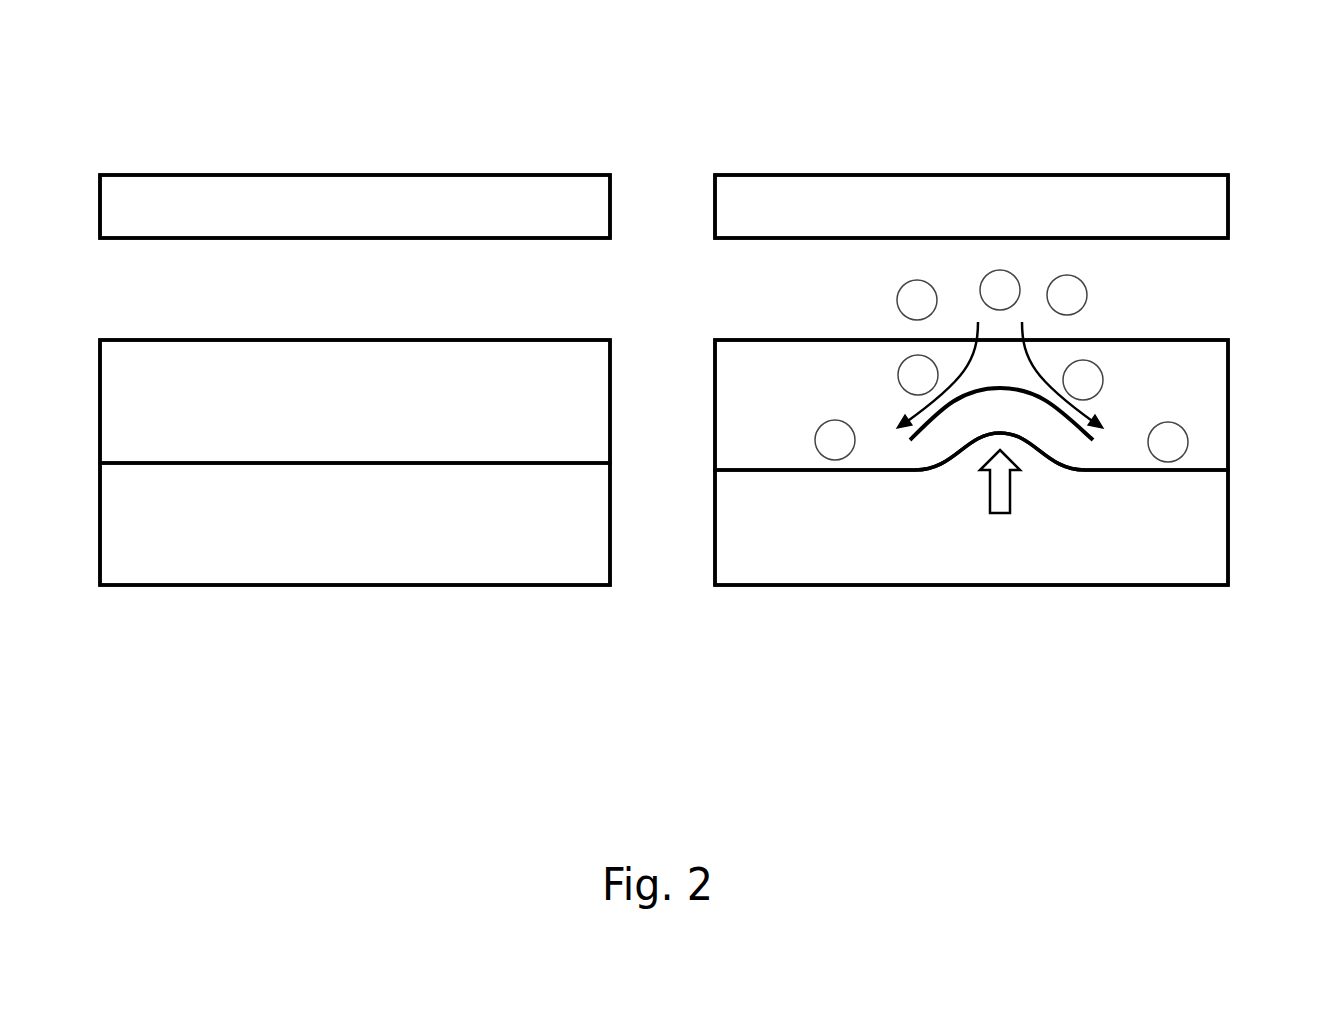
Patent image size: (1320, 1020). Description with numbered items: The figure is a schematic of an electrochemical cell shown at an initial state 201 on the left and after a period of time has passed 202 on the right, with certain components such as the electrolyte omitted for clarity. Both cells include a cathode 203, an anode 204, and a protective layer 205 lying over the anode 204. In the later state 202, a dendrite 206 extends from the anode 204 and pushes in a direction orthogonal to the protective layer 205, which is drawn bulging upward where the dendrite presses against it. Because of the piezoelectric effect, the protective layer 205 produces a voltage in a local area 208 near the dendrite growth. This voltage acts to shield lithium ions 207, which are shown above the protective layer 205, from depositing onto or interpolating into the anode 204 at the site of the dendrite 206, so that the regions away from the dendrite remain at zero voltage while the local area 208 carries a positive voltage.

The initial state 201 is at (198, 90).
The state after a period of time has passed 202 is at (888, 91).
The cathode 203 is at (664, 206).
The anode 204 is at (1262, 540).
The protective layer 205 is at (1253, 415).
The dendrite 206 is at (1036, 476).
The lithium ions 207 is at (1106, 292).
The local area 208 is at (970, 441).